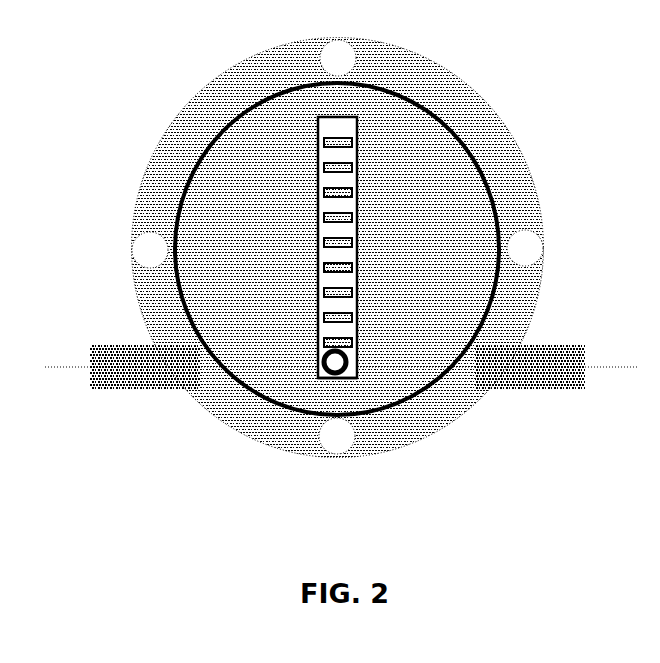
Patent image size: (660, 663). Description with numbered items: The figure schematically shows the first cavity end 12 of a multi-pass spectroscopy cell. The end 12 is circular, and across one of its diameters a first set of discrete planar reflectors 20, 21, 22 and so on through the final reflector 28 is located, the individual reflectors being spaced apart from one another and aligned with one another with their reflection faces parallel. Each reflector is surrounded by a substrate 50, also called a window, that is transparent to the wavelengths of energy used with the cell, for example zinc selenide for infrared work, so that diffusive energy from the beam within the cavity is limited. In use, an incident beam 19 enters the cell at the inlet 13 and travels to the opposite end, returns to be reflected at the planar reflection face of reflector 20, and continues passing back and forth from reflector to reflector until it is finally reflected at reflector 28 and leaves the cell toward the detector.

The first cavity end 12 is at (200, 112).
The planar reflector 28 is at (318, 140).
The substrate 50 is at (535, 382).
The planar reflector 22 is at (318, 291).
The planar reflector 21 is at (318, 316).
The planar reflector 20 is at (318, 341).
The inlet 13 is at (347, 360).
The incident beam 19 is at (317, 378).